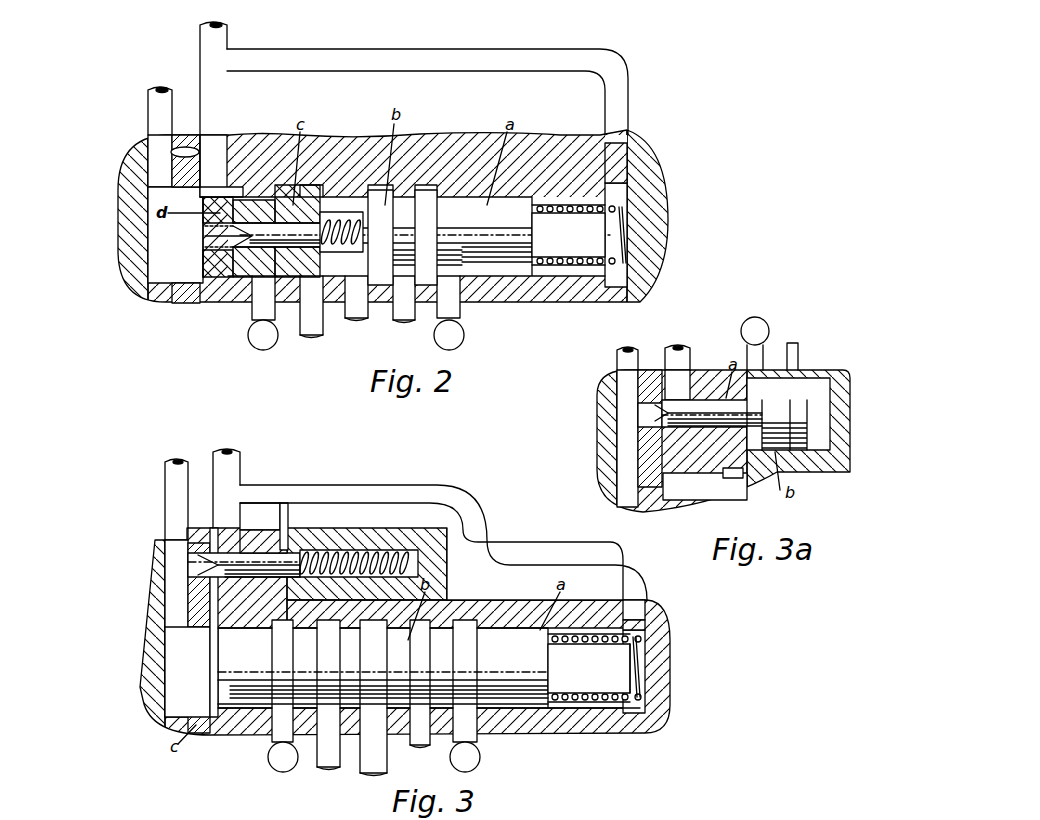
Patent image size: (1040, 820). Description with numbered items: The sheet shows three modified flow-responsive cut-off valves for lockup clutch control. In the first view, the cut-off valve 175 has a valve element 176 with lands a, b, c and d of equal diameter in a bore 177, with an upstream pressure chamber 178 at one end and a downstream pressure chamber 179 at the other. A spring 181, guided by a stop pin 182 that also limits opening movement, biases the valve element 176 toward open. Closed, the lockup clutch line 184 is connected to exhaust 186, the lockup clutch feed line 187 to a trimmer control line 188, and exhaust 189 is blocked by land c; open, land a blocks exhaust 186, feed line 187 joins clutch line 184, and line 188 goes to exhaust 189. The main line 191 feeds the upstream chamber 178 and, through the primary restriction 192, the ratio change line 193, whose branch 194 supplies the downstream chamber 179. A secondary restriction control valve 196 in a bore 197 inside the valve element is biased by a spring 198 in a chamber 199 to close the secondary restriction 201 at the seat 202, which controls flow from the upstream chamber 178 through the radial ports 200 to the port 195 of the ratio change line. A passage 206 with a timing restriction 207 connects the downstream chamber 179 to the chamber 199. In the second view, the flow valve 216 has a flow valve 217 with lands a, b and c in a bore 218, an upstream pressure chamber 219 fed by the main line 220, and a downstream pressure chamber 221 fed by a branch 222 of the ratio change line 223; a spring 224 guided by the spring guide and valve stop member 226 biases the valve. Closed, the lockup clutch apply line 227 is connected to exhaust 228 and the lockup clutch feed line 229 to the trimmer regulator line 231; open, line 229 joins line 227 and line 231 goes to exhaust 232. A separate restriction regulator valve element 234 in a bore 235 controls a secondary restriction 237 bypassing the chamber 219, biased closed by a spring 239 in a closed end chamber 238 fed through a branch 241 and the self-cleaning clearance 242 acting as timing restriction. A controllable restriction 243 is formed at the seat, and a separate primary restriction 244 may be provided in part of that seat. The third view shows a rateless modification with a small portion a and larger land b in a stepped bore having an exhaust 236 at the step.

In FIG. 2, the flow responsive cut-off valve 175 is at (110, 258).
In FIG. 2, the valve element 176 is at (405, 212).
In FIG. 2, the bore 177 is at (428, 197).
In FIG. 2, the upstream pressure chamber 178 is at (160, 276).
In FIG. 2, the downstream pressure chamber 179 is at (565, 205).
In FIG. 2, the spring 181 is at (612, 205).
In FIG. 2, the stop pin 182 is at (626, 228).
In FIG. 2, the lockup clutch line 184 is at (403, 318).
In FIG. 2, the exhaust 186 is at (462, 345).
In FIG. 2, the lockup clutch feed line 187 is at (358, 315).
In FIG. 2, the trimmer control line 188 is at (312, 325).
In FIG. 2, the exhaust 189 is at (250, 345).
In FIG. 2, the main line 191 is at (160, 120).
In FIG. 2, the primary restriction 192 is at (170, 152).
In FIG. 2, the ratio change line 193 is at (205, 88).
In FIG. 2, the branch 194 is at (300, 52).
In FIG. 2, the port 195 is at (238, 278).
In FIG. 2, the secondary restriction control valve 196 is at (265, 200).
In FIG. 2, the bore 197 is at (322, 212).
In FIG. 2, the spring 198 is at (352, 200).
In FIG. 2, the chamber 199 is at (260, 283).
In FIG. 2, the radial ports 200 is at (158, 260).
In FIG. 2, the secondary restriction 201 is at (215, 233).
In FIG. 2, the seat 202 is at (212, 243).
In FIG. 2, the passage 206 is at (512, 225).
In FIG. 2, the timing restriction 207 is at (462, 290).
In FIG. 3A, the flow valve 216 is at (580, 437).
In FIG. 3, the flow valve 216 is at (137, 643).
In FIG. 3A, the flow valve 217 is at (703, 500).
In FIG. 3, the flow valve 217 is at (492, 630).
In FIG. 3, the bore 218 is at (445, 630).
In FIG. 3A, the upstream pressure chamber 219 is at (630, 484).
In FIG. 3, the upstream pressure chamber 219 is at (192, 682).
In FIG. 3A, the main line 220 is at (615, 362).
In FIG. 3, the main line 220 is at (180, 478).
In FIG. 3, the downstream pressure chamber 221 is at (582, 700).
In FIG. 3, the branch 222 is at (400, 487).
In FIG. 3A, the ratio change line 223 is at (682, 362).
In FIG. 3, the ratio change line 223 is at (228, 470).
In FIG. 3, the spring 224 is at (640, 700).
In FIG. 3, the spring guide and valve stop member 226 is at (625, 660).
In FIG. 3, the lockup clutch apply line 227 is at (428, 742).
In FIG. 3, the exhaust 228 is at (480, 765).
In FIG. 3, the lockup clutch feed line 229 is at (370, 770).
In FIG. 3, the trimmer regulator line 231 is at (326, 752).
In FIG. 3, the exhaust 232 is at (268, 758).
In FIG. 3A, the restriction regulator valve element 234 is at (712, 428).
In FIG. 3, the restriction regulator valve element 234 is at (272, 570).
In FIG. 3A, the bore 235 is at (700, 392).
In FIG. 3, the bore 235 is at (250, 555).
In FIG. 3A, the exhaust 236 is at (758, 318).
In FIG. 3A, the secondary restriction 237 is at (650, 413).
In FIG. 3, the secondary restriction 237 is at (190, 572).
In FIG. 3, the closed end chamber 238 is at (378, 548).
In FIG. 3, the spring 239 is at (352, 598).
In FIG. 3A, the branch 241 is at (792, 343).
In FIG. 3, the branch 241 is at (292, 525).
In FIG. 3A, the clearance 242 is at (805, 375).
In FIG. 3, the clearance 242 is at (312, 550).
In FIG. 3A, the controllable restriction 243 is at (660, 418).
In FIG. 3, the controllable restriction 243 is at (208, 580).
In FIG. 3A, the primary restriction 244 is at (660, 406).
In FIG. 3, the primary restriction 244 is at (208, 558).